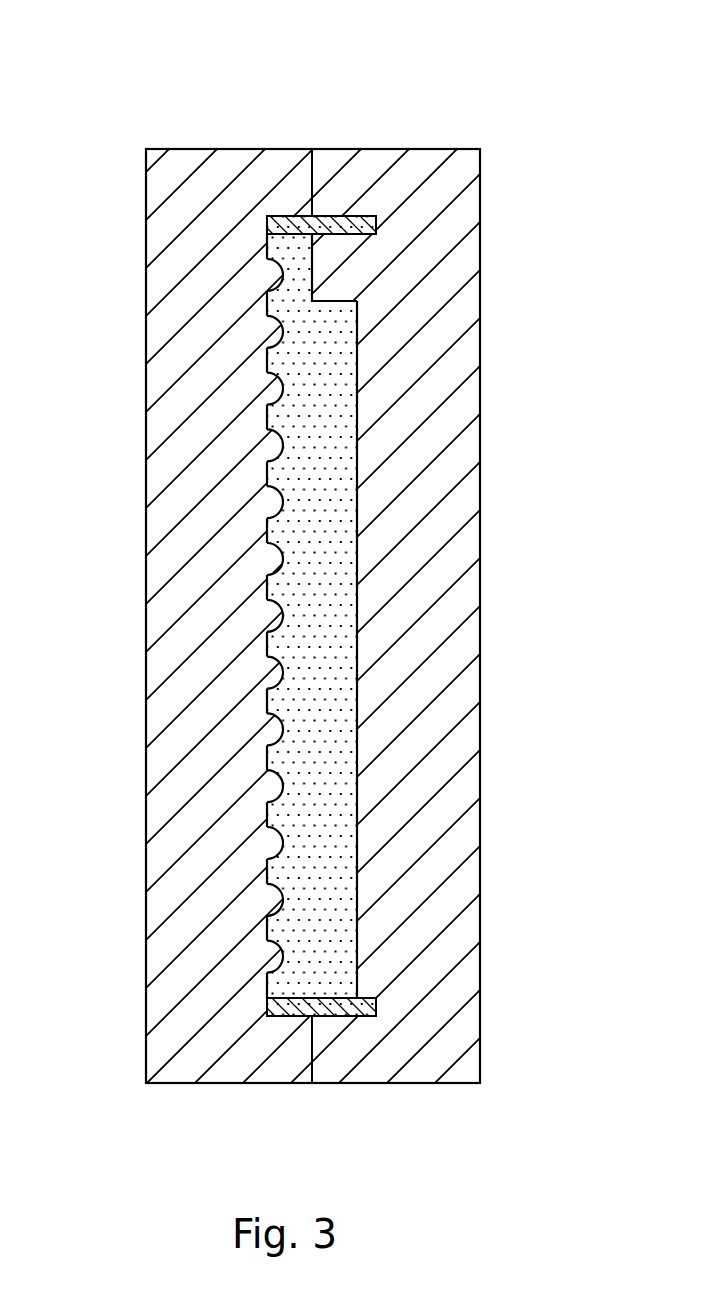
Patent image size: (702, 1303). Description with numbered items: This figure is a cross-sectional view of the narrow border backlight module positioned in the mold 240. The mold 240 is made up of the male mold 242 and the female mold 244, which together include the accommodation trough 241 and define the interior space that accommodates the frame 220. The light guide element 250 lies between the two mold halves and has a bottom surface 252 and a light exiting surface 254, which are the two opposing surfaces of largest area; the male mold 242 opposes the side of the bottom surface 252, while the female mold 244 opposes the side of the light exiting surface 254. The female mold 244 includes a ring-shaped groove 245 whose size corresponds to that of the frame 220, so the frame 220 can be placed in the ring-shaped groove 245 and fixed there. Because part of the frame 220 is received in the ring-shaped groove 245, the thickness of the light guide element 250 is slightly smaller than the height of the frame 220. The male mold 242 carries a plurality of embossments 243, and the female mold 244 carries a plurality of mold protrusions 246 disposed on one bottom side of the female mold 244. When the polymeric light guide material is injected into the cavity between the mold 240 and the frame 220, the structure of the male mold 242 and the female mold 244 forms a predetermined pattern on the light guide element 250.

The mold 240 is at (377, 55).
The male mold 242 is at (233, 160).
The female mold 244 is at (378, 160).
The frame 220 is at (378, 227).
The ring-shaped groove 245 is at (375, 236).
The mold protrusions 246 is at (332, 268).
The light guide element 250 is at (340, 368).
The light exiting surface 254 is at (358, 425).
The bottom surface 252 is at (268, 410).
The embossments 243 is at (272, 562).
The accommodation trough 241 is at (277, 1018).